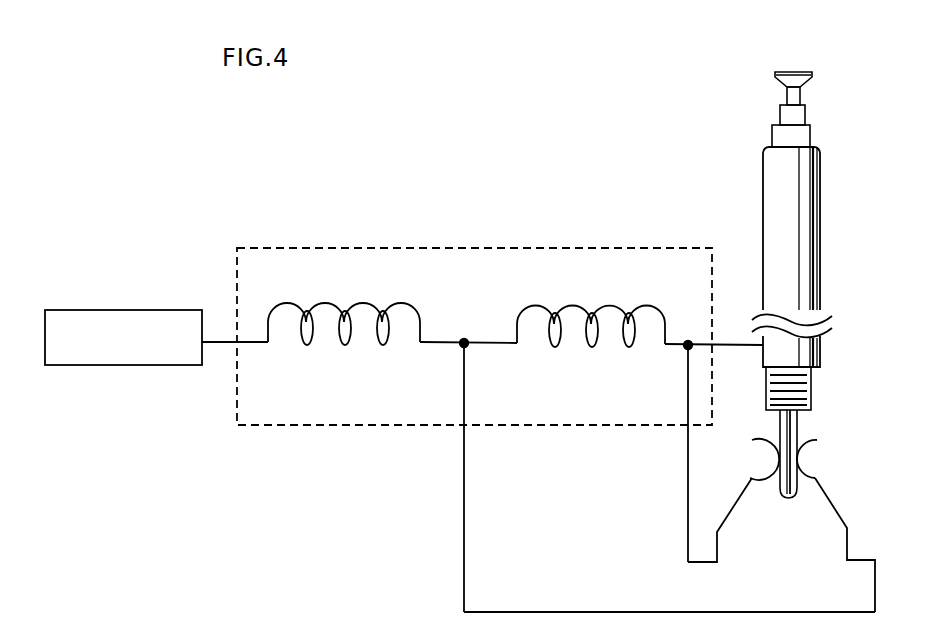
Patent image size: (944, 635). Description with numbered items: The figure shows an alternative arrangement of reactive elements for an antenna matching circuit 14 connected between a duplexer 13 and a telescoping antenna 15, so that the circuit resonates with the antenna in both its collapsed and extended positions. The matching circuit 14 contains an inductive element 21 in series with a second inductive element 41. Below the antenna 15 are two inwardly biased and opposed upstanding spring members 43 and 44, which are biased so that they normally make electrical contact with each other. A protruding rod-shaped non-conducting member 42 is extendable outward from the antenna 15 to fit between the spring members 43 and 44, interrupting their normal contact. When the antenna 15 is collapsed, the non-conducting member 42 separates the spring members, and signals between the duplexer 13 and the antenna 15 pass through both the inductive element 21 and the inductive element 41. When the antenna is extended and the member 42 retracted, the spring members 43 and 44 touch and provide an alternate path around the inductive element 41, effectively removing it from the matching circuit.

The duplexer 13 is at (123, 307).
The antenna matching circuit 14 is at (474, 304).
The antenna 15 is at (822, 241).
The inductive element 21 is at (344, 359).
The second inductive element 41 is at (591, 363).
The protruding rod-shaped non-conducting member 42 is at (829, 440).
The spring member 43 is at (843, 526).
The spring member 44 is at (733, 500).